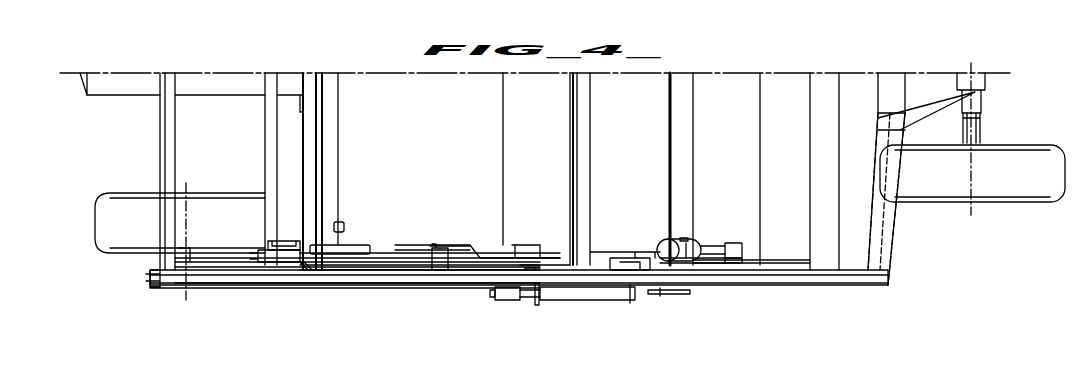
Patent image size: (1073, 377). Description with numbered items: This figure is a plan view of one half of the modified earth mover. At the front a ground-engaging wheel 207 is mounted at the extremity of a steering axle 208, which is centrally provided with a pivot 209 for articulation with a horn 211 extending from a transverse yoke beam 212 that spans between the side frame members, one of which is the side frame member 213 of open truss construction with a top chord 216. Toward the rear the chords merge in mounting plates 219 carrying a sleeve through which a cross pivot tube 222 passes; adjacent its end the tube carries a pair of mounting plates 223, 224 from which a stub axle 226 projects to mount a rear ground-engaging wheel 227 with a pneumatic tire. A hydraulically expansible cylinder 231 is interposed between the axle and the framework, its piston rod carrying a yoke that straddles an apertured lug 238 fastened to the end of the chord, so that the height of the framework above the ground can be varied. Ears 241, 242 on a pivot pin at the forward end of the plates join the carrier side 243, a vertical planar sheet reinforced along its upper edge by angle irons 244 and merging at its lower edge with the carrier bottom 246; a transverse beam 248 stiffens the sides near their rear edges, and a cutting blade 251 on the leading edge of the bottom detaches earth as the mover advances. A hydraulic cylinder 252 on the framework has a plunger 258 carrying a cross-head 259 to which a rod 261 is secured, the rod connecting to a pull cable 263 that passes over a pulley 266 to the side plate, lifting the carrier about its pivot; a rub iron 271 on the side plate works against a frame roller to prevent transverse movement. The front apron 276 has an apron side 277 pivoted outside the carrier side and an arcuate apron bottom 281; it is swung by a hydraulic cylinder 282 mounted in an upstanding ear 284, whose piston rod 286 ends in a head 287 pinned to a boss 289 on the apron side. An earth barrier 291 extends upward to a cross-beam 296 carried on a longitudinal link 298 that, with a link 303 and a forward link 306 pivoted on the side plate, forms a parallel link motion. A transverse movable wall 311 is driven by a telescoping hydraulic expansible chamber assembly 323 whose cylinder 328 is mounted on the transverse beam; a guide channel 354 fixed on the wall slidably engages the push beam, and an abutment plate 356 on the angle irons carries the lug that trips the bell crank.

The front ground-engaging wheel 207 is at (990, 203).
The steering axle 208 is at (982, 118).
The pivot 209 is at (984, 72).
The horn 211 is at (910, 78).
The transverse yoke beam 212 is at (893, 222).
The side frame member 213 is at (792, 290).
The top chord 216 is at (350, 280).
The mounting plates 219 is at (243, 268).
The cross pivot tube 222 is at (265, 118).
The mounting plate 223 is at (199, 285).
The mounting plate 224 is at (216, 258).
The stub axle 226 is at (195, 258).
The ground-engaging wheel 227 is at (109, 190).
The hydraulically expansible cylinder 231 is at (150, 284).
The apertured lug 238 is at (148, 275).
The ear 241 is at (294, 268).
The ear 242 is at (307, 272).
The carrier side 243 is at (396, 261).
The angle irons 244 is at (478, 254).
The carrier bottom 246 is at (352, 86).
The transverse beam 248 is at (318, 120).
The cutting blade 251 is at (693, 118).
The hydraulic cylinder 252 is at (576, 301).
The plunger 258 is at (506, 301).
The cross-head 259 is at (490, 296).
The rod 261 is at (536, 301).
The pull cable 263 is at (630, 302).
The pulley 266 is at (660, 296).
The rub iron 271 is at (645, 252).
The front apron 276 is at (775, 82).
The apron side 277 is at (780, 256).
The apron bottom 281 is at (735, 78).
The hydraulic cylinder 282 is at (684, 256).
The upstanding ear 284 is at (690, 233).
The piston rod 286 is at (703, 244).
The head 287 is at (737, 243).
The boss 289 is at (735, 262).
The earth barrier 291 is at (497, 121).
The cross-beam 296 is at (590, 118).
The longitudinal link 298 is at (548, 262).
The link 303 is at (518, 256).
The forward link 306 is at (622, 256).
The movable wall 311 is at (326, 73).
The hydraulic expansible chamber assembly 323 is at (86, 101).
The cylinder 328 is at (132, 99).
The guide channel 354 is at (360, 247).
The abutment plate 356 is at (440, 247).